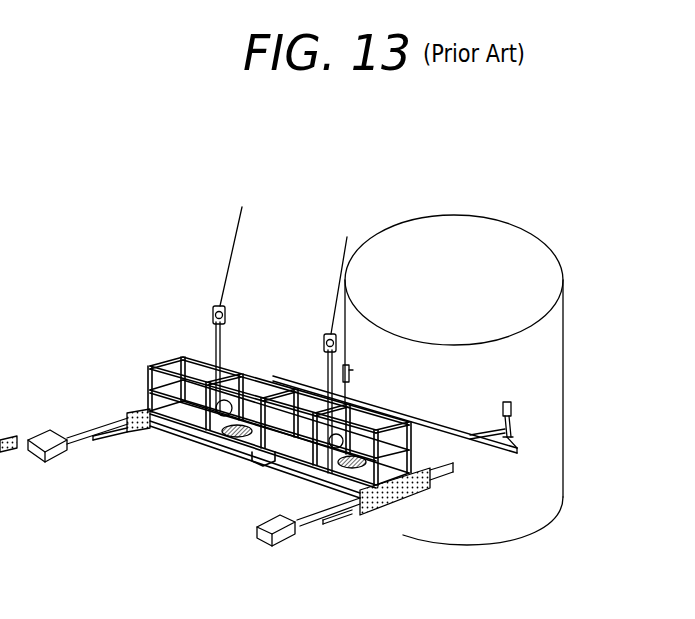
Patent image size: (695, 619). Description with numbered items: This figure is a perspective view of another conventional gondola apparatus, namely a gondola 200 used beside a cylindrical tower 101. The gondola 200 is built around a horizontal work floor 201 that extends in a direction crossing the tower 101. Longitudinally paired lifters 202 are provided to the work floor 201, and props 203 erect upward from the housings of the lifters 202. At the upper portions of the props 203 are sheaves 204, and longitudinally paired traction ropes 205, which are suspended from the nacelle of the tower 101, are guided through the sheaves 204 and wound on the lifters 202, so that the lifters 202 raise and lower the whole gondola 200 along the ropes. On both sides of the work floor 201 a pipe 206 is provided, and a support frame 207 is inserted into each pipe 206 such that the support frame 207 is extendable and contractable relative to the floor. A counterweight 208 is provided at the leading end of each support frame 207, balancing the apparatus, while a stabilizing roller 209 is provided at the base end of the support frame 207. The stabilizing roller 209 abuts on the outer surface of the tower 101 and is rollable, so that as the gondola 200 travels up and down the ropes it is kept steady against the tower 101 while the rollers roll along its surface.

The tower 101 is at (553, 463).
The gondola 200 is at (341, 532).
The horizontal work floor 201 is at (291, 452).
The lifters 202 is at (208, 430).
The props 203 is at (215, 340).
The sheaves 204 is at (228, 313).
The traction ropes 205 is at (238, 222).
The pipe 206 is at (401, 496).
The support frame 207 is at (473, 470).
The counterweight 208 is at (284, 546).
The stabilizing roller 209 is at (512, 405).